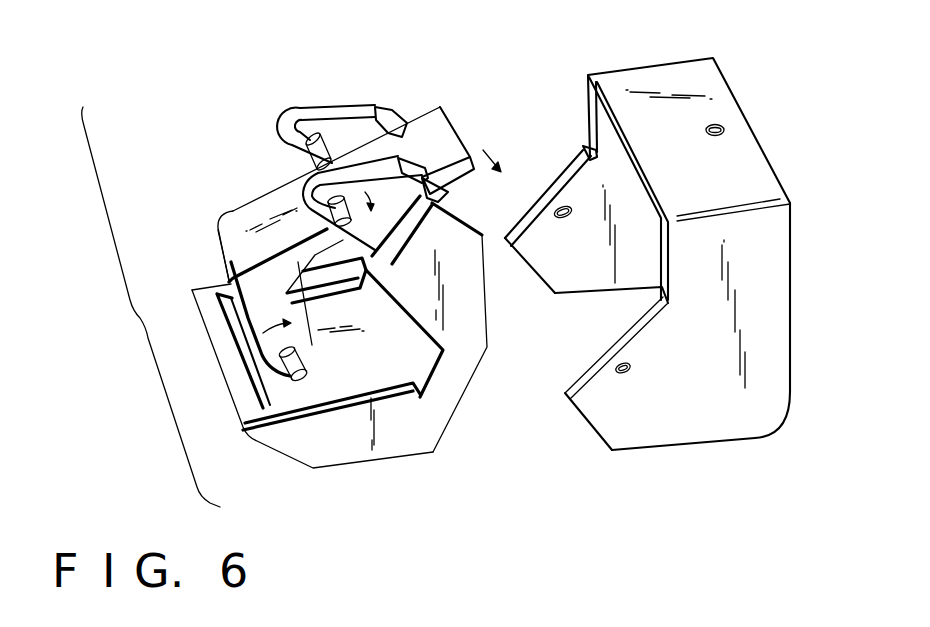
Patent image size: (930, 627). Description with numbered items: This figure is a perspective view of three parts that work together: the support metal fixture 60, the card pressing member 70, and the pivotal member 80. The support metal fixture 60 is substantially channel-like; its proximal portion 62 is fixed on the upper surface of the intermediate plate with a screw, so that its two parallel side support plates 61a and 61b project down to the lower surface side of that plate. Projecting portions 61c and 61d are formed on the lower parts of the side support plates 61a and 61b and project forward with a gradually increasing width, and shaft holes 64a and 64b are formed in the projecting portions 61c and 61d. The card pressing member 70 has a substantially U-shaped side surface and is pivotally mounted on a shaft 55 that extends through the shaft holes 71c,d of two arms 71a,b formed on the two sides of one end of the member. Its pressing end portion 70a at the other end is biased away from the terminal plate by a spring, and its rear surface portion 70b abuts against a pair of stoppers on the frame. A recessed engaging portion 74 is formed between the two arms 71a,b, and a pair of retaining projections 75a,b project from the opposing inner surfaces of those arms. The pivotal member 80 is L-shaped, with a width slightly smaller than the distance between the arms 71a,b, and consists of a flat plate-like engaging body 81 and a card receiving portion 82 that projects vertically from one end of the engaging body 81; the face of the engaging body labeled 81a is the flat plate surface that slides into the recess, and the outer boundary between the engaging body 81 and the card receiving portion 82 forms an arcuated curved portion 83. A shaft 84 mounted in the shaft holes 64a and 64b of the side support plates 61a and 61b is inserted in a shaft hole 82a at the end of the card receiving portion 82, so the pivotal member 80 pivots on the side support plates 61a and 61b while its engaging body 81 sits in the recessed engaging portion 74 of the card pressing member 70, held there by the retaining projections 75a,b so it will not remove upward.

The shaft 55 is at (315, 152).
The support metal fixture 60 is at (760, 180).
The side support plate 61a is at (589, 282).
The side support plate 61b is at (717, 423).
The projecting portion 61c is at (525, 270).
The projecting portion 61d is at (587, 410).
The proximal portion 62 is at (718, 110).
The shaft hole 64a is at (562, 205).
The shaft hole 64b is at (643, 380).
The card pressing member 70 is at (407, 440).
The pressing end portion 70a is at (237, 393).
The rear surface portion 70b is at (486, 348).
The arms 71a,b is at (378, 160).
The shaft holes 71c,d is at (290, 197).
The recessed engaging portion 74 is at (437, 197).
The retaining projections 75a,b is at (443, 132).
The pivotal member 80 is at (242, 215).
The engaging body 81 is at (450, 143).
The bracket arm 81a is at (265, 218).
The card receiving portion 82 is at (272, 348).
The shaft hole 82a is at (318, 405).
The arcuated curved portion 83 is at (218, 250).
The shaft 84 is at (287, 415).